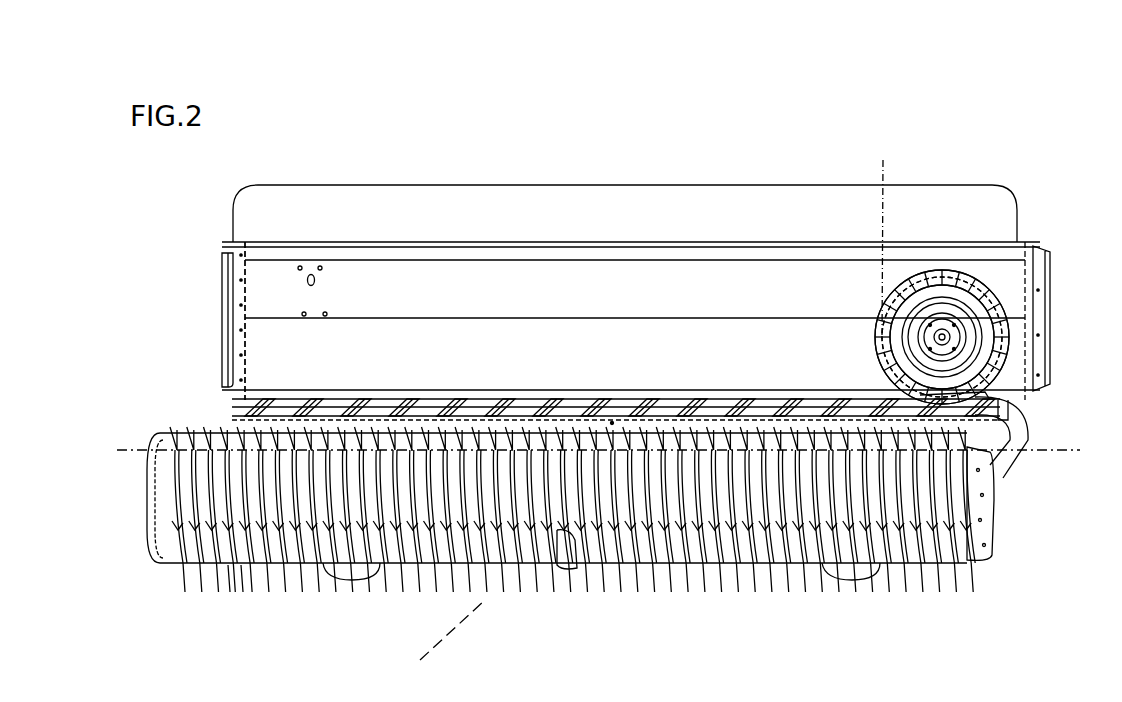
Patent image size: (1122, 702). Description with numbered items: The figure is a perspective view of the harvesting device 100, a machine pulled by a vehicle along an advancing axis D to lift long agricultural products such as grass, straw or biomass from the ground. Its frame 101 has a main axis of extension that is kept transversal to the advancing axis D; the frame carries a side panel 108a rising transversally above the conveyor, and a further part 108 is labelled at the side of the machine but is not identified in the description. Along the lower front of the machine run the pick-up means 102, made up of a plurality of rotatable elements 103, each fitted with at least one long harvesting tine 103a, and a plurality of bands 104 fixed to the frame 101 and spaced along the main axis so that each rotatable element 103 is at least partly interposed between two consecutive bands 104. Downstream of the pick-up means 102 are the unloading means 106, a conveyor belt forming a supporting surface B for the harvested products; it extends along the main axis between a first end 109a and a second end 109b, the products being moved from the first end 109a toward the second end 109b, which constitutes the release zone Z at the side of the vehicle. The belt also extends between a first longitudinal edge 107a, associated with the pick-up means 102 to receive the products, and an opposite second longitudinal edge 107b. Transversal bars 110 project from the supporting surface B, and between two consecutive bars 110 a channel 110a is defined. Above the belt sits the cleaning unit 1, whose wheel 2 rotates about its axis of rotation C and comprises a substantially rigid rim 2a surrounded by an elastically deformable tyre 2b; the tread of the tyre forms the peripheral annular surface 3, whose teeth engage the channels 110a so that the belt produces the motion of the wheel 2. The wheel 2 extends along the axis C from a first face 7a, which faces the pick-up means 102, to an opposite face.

The harvesting device 100 is at (428, 143).
The frame 101 is at (210, 322).
The pick-up means 102 is at (784, 603).
The rotatable elements 103 is at (665, 595).
The harvesting tine 103a is at (572, 566).
The bands 104 is at (242, 566).
The unloading means 106 is at (1003, 468).
The first longitudinal edge 107a is at (310, 566).
The second longitudinal edge 107b is at (402, 408).
The right side panel 108 is at (1032, 285).
The side panel 108a is at (747, 183).
The first end 109a is at (998, 470).
The second end 109b is at (225, 417).
The transversal bars 110 is at (640, 425).
The channel 110a is at (612, 425).
The cleaning unit 1 is at (977, 302).
The wheel 2 is at (1003, 368).
The rigid rim 2a is at (996, 280).
The elastically deformable tyre 2b is at (1000, 352).
The peripheral annular surface 3 is at (985, 393).
The first face 7a is at (941, 328).
The supporting surface B is at (277, 413).
The axis of rotation C is at (883, 239).
The advancing axis D is at (452, 639).
The release zone Z is at (136, 471).